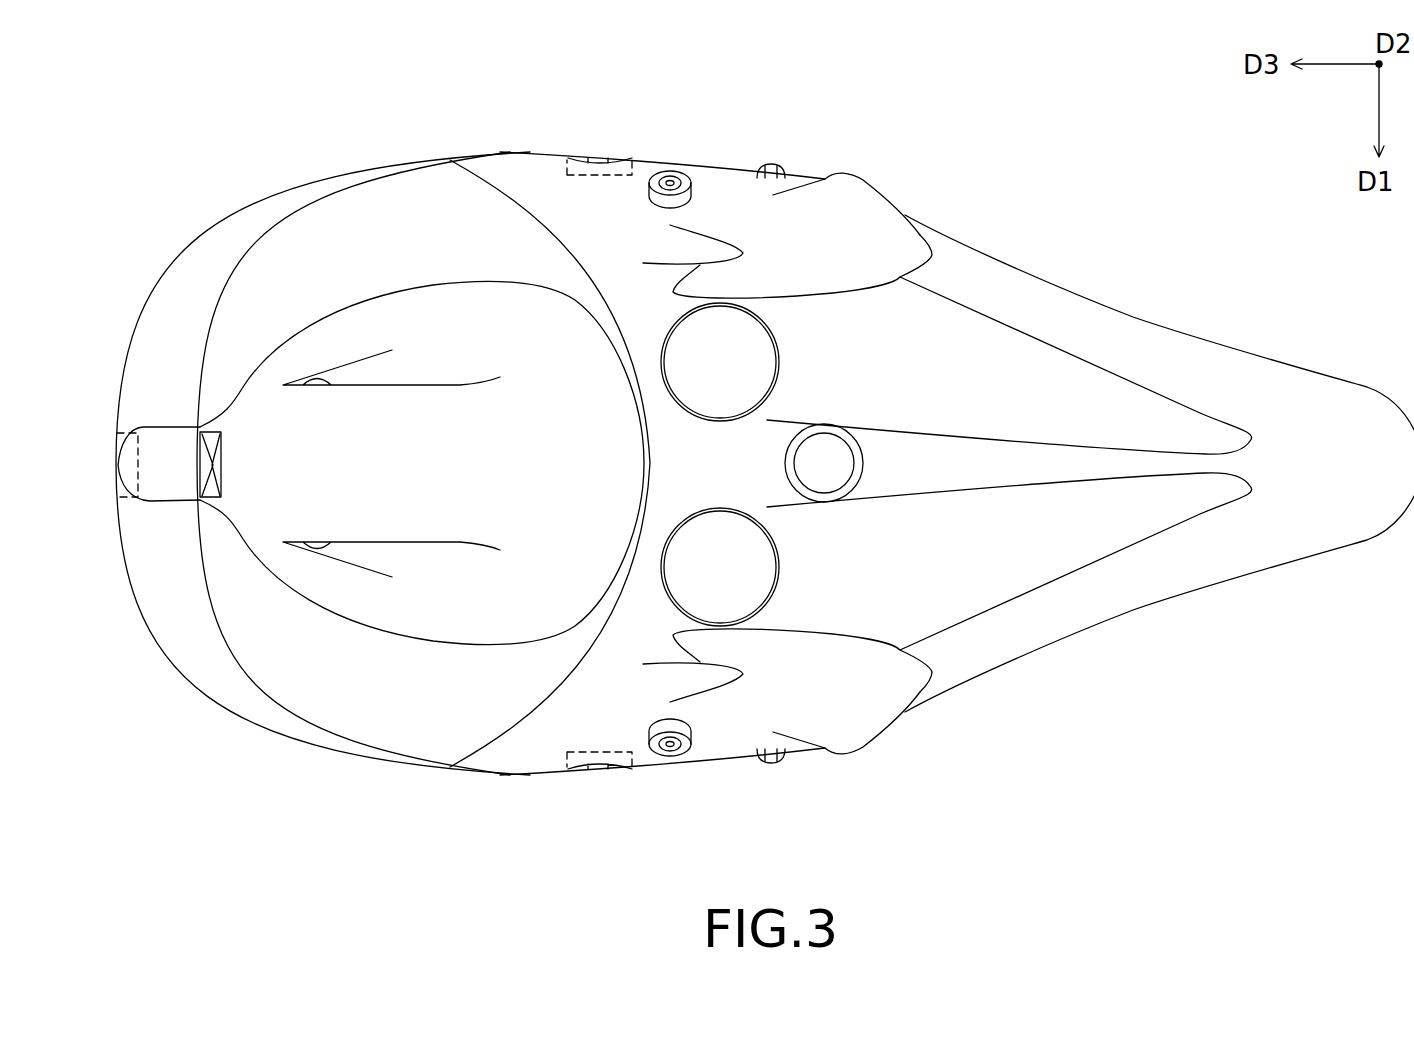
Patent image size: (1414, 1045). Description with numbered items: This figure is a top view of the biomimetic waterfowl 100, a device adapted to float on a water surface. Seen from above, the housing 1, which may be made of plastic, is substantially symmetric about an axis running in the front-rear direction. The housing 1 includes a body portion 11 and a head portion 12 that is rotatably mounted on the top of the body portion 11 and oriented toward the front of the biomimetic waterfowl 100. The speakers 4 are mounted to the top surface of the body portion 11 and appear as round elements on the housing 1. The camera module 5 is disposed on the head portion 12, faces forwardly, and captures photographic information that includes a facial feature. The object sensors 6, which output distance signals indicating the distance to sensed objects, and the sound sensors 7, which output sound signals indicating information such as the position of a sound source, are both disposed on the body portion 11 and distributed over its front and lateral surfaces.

The biomimetic waterfowl 100 is at (214, 90).
The housing 1 is at (452, 792).
The body portion 11 is at (510, 752).
The head portion 12 is at (397, 437).
The speakers 4 is at (720, 557).
The camera module 5 is at (200, 465).
The object sensors 6 is at (123, 501).
The sound sensors 7 is at (677, 180).